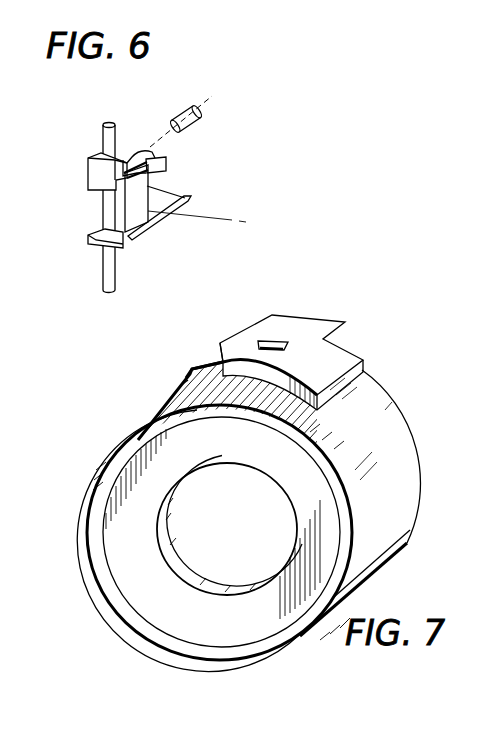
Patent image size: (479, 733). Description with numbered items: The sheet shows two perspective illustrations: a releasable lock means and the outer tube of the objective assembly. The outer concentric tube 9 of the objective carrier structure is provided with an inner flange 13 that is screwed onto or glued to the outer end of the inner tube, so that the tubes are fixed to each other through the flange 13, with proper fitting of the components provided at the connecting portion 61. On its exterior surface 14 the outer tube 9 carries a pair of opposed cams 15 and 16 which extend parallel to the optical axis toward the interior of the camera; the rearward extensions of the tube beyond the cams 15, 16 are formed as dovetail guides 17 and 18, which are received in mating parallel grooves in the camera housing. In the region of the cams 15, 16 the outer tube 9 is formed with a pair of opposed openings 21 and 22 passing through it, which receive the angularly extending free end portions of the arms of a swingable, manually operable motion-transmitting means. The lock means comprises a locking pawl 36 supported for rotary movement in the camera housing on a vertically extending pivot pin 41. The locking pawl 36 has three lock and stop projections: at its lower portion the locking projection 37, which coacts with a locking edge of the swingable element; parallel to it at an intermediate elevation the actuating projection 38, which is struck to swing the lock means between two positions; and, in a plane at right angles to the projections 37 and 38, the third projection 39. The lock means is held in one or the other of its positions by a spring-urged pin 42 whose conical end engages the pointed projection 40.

In FIG. 7, the outer concentric tube 9 is at (113, 457).
In FIG. 7, the inner flange 13 is at (113, 503).
In FIG. 7, the exterior surface 14 is at (403, 436).
In FIG. 7, the cam 15 is at (163, 366).
In FIG. 7, the cam 16 is at (220, 366).
In FIG. 7, the dovetail guide 17 is at (325, 363).
In FIG. 7, the dovetail guide 18 is at (340, 332).
In FIG. 7, the opening 21 is at (267, 317).
In FIG. 7, the opening 22 is at (263, 343).
In FIG. 6, the locking pawl 36 is at (131, 242).
In FIG. 6, the locking projection 37 is at (186, 198).
In FIG. 6, the actuating projection 38 is at (167, 165).
In FIG. 6, the third projection 39 is at (102, 167).
In FIG. 6, the pointed projection 40 is at (142, 150).
In FIG. 6, the pivot pin 41 is at (107, 125).
In FIG. 6, the pin 42 is at (198, 118).
In FIG. 7, the connecting portion 61 is at (160, 552).